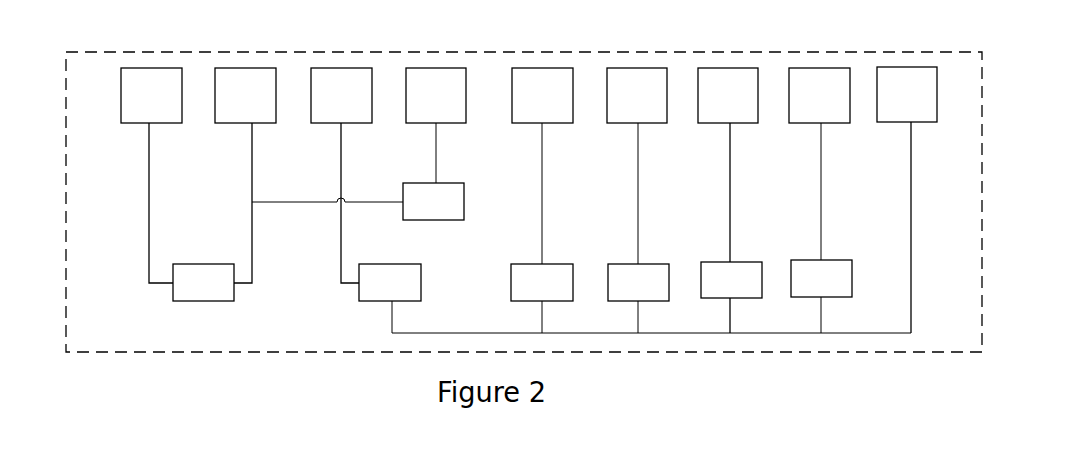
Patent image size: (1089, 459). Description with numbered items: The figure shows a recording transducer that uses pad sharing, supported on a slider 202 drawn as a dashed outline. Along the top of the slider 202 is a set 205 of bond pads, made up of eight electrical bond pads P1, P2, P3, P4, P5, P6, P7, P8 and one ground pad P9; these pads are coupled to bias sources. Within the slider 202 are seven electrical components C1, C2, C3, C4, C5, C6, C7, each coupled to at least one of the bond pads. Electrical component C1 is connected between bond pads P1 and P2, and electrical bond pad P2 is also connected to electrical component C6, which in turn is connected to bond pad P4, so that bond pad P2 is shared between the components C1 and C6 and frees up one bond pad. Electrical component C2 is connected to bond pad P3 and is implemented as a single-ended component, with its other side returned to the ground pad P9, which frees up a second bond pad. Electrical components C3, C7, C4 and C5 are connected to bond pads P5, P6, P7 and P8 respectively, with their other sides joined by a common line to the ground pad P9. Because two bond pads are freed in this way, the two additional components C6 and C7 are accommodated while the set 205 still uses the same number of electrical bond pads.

The slider 202 is at (982, 136).
The set of bond pads 205 is at (594, 86).
The electrical bond pad P1 is at (151, 95).
The electrical bond pad P2 is at (245, 95).
The electrical bond pad P3 is at (341, 95).
The electrical bond pad P4 is at (436, 95).
The electrical bond pad P5 is at (542, 95).
The electrical bond pad P6 is at (637, 95).
The electrical bond pad P7 is at (728, 95).
The electrical bond pad P8 is at (819, 95).
The ground pad P9 is at (950, 88).
The electrical component C1 is at (203, 282).
The electrical component C2 is at (390, 282).
The electrical component C3 is at (542, 282).
The electrical component C4 is at (731, 280).
The electrical component C5 is at (821, 278).
The electrical component C6 is at (433, 201).
The electrical component C7 is at (638, 282).